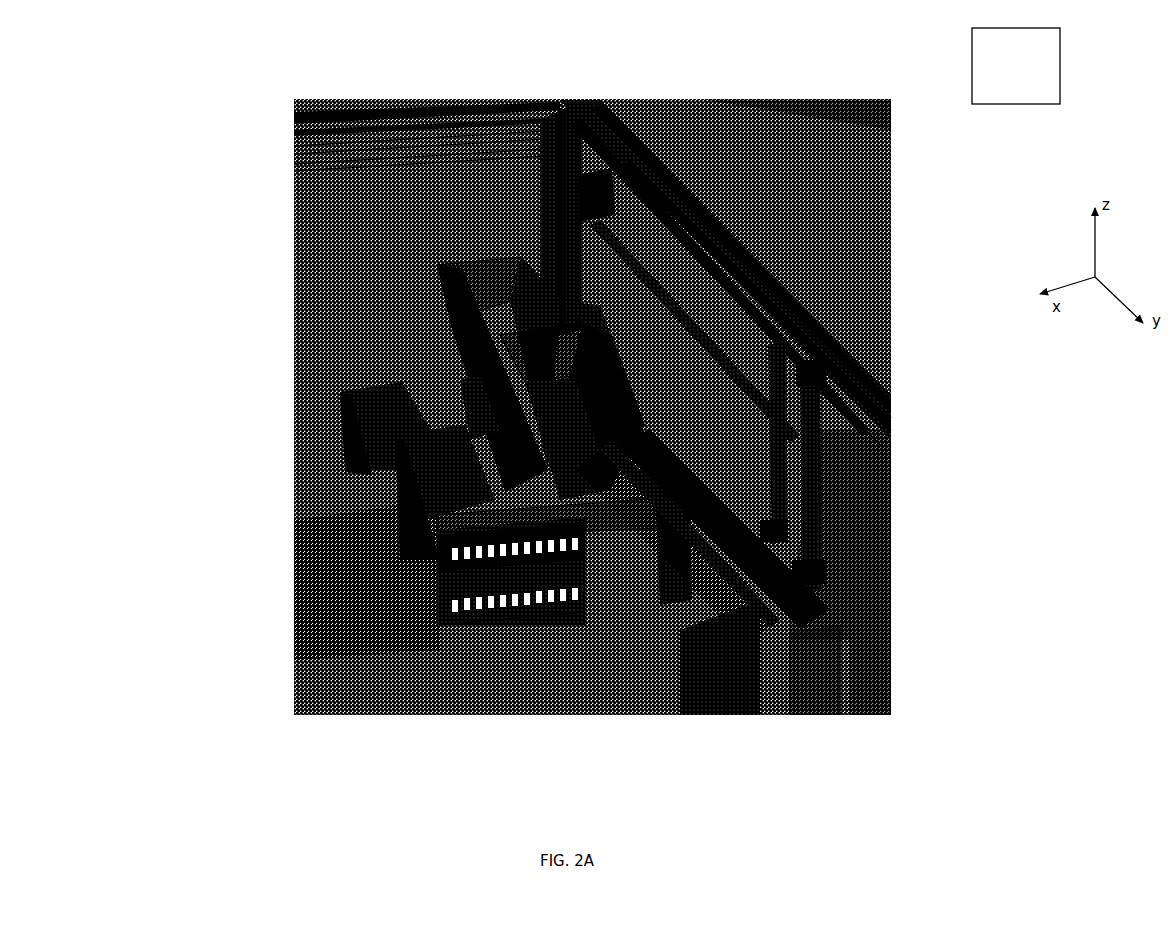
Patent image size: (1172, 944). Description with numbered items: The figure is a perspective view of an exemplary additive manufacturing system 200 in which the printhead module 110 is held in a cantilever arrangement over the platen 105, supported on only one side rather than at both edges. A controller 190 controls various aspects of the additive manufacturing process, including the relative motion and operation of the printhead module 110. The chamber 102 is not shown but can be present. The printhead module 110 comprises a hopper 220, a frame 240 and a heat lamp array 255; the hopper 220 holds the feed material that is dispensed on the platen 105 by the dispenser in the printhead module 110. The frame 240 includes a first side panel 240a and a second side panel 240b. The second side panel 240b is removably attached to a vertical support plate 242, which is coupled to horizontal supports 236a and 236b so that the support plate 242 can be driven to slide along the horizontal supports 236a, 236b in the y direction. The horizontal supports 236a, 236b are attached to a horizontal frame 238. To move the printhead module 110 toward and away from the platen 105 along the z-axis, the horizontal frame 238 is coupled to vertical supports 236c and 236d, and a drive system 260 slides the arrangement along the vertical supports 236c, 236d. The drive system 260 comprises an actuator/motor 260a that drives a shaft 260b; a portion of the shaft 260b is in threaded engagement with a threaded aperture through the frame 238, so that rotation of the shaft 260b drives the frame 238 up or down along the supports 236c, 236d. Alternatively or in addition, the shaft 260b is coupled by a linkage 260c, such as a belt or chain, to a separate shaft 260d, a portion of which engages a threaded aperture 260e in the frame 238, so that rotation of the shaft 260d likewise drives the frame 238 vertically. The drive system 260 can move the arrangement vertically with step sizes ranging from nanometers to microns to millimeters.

The additive manufacturing system 200 is at (294, 72).
The controller 190 is at (571, 99).
The vertical support 236d is at (583, 246).
The actuator/motor 260a is at (602, 177).
The drive system 260 is at (725, 272).
The shaft 260b is at (595, 298).
The linkage 260c is at (648, 276).
The threaded aperture 260e is at (768, 525).
The separate shaft 260d is at (758, 522).
The hopper 220 is at (476, 272).
The printhead module 110 is at (392, 392).
The chamber 102 is at (873, 376).
The vertical support 236c is at (810, 453).
The second side panel 240b is at (652, 478).
The first side panel 240a is at (415, 530).
The heat lamp array 255 is at (462, 610).
The platen 105 is at (378, 688).
The frame 240 is at (600, 570).
The vertical support plate 242 is at (672, 588).
The horizontal support 236b is at (740, 635).
The horizontal support 236a is at (790, 616).
The horizontal frame 238 is at (820, 705).